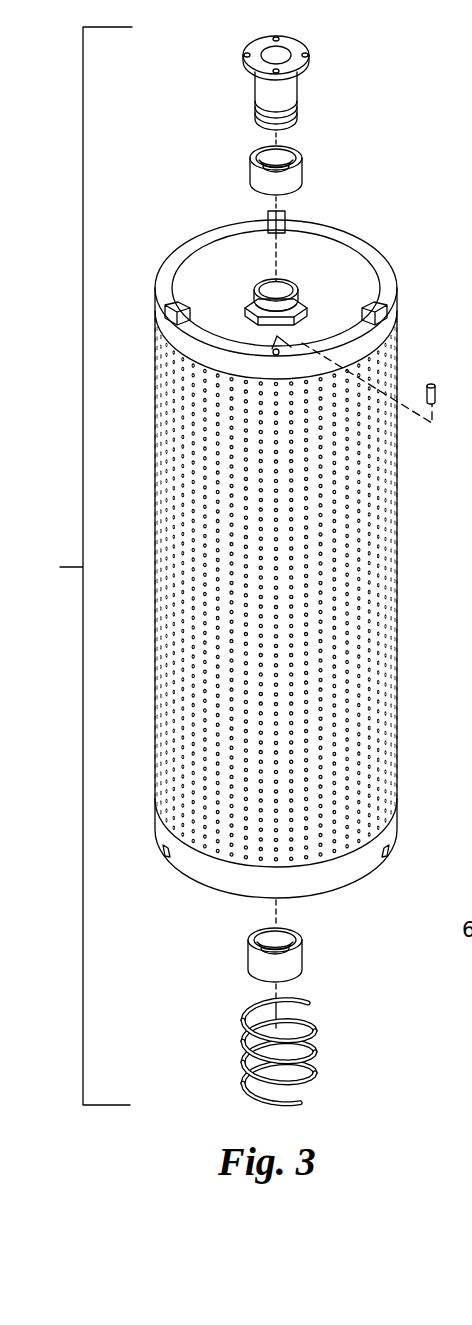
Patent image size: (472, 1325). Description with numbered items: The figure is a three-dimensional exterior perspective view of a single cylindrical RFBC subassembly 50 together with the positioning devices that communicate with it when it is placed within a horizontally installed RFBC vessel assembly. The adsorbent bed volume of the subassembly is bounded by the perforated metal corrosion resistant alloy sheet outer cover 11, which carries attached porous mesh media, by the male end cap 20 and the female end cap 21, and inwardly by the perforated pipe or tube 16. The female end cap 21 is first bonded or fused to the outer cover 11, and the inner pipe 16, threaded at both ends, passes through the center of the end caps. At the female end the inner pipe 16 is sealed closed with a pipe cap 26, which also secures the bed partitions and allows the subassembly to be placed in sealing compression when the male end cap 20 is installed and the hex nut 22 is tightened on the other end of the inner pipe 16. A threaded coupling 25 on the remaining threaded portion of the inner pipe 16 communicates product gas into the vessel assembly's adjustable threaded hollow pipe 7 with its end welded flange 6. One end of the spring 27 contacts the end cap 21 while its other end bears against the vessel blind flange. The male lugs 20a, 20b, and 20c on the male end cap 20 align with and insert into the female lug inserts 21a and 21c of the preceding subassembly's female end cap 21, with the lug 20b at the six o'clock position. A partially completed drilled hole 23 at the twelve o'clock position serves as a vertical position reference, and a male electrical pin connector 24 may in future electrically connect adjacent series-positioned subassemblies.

The RFBC subassembly 50 is at (80, 566).
The end welded flange 6 is at (246, 45).
The threaded cylindrical hollow element or pipe 7 is at (255, 100).
The threaded coupling 25 is at (250, 164).
The male end cap 20 is at (233, 232).
The male lug 20b is at (287, 212).
The male lug 20a is at (381, 301).
The male lug 20c is at (165, 307).
The perforated pipe or tube 16 is at (257, 282).
The hex nut 22 is at (249, 305).
The partially completed drilled hole 23 is at (272, 353).
The male electrical pin connector 24 is at (431, 383).
The perforated metal corrosion resistant alloy sheet outer cover 11 is at (155, 463).
The female end cap 21 is at (217, 878).
The female lug insert 21c is at (168, 853).
The female lug insert 21a is at (385, 853).
The pipe cap 26 is at (248, 943).
The spring 27 is at (245, 1008).